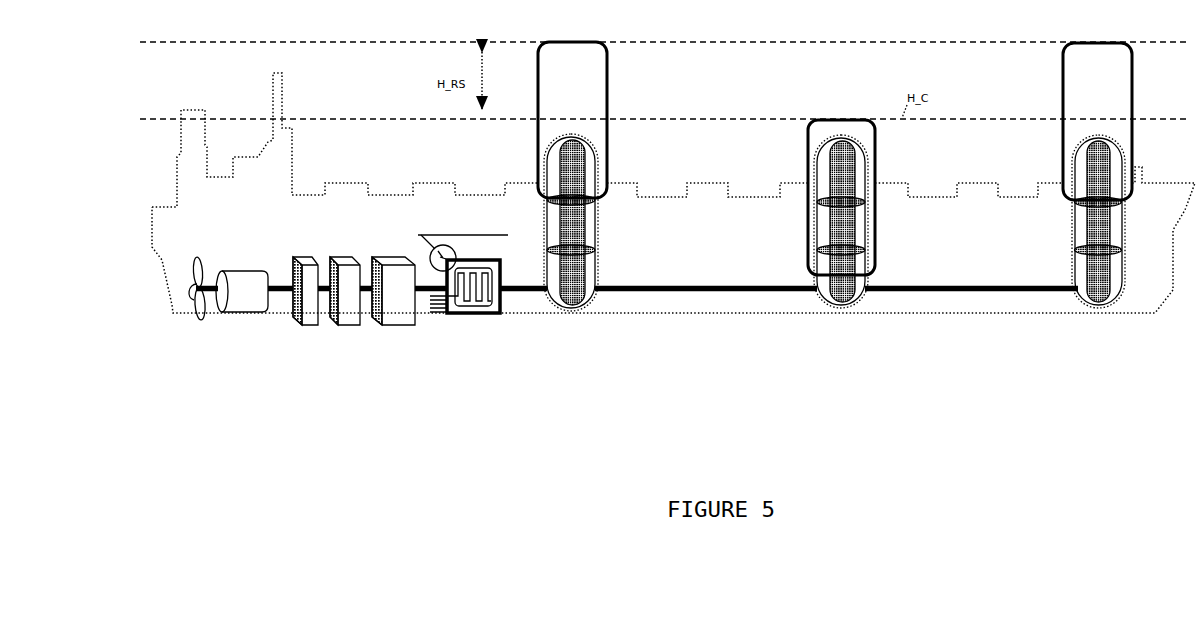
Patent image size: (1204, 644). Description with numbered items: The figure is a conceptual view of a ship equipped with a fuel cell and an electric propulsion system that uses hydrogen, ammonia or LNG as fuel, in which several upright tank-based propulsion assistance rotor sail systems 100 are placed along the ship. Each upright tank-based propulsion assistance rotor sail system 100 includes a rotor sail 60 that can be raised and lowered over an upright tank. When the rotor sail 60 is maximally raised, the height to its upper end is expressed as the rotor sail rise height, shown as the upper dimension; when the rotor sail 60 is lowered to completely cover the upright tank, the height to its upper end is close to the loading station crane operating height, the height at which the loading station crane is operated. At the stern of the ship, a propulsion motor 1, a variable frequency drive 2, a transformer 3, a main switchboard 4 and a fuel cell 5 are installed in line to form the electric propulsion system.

The propulsion motor 1 is at (242, 303).
The variable frequency drive 2 is at (308, 315).
The transformer 3 is at (350, 315).
The main switchboard 4 is at (398, 315).
The fuel cell 5 is at (486, 316).
The rotor sail 60 is at (609, 88).
The upright tank-based propulsion assistance rotor sail system 100 is at (835, 159).